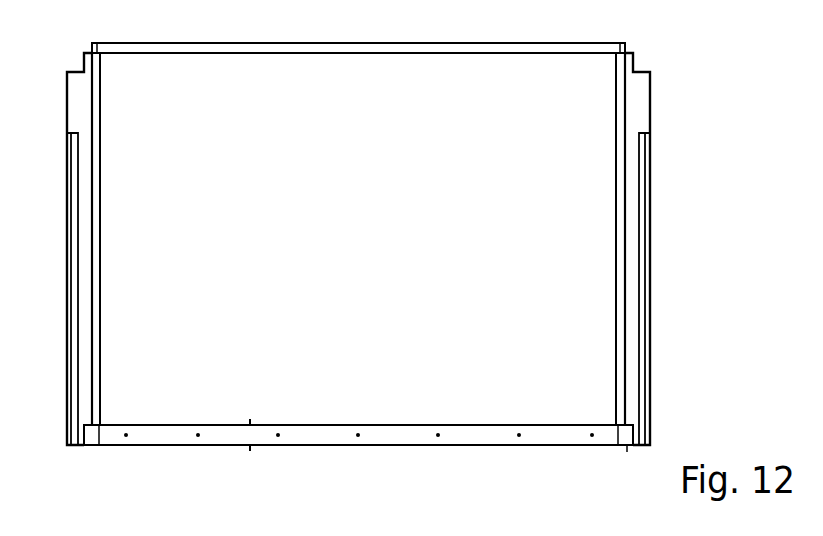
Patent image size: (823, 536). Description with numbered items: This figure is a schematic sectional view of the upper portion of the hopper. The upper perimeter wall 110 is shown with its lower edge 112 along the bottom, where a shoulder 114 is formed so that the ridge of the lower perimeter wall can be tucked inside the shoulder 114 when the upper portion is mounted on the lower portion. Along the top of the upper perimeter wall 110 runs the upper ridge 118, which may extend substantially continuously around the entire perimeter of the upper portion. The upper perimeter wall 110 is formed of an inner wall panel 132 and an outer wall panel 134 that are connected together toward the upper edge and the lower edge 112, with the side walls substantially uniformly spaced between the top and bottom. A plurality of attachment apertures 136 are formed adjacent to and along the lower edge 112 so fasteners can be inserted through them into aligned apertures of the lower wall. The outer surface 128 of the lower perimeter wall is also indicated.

The upper perimeter wall 110 is at (97, 303).
The lower edge 112 is at (312, 445).
The shoulder 114 is at (88, 424).
The upper ridge 118 is at (132, 43).
The outer surface 128 is at (72, 250).
The inner wall panel 132 is at (97, 215).
The outer wall panel 134 is at (67, 393).
The attachment apertures 136 is at (198, 437).